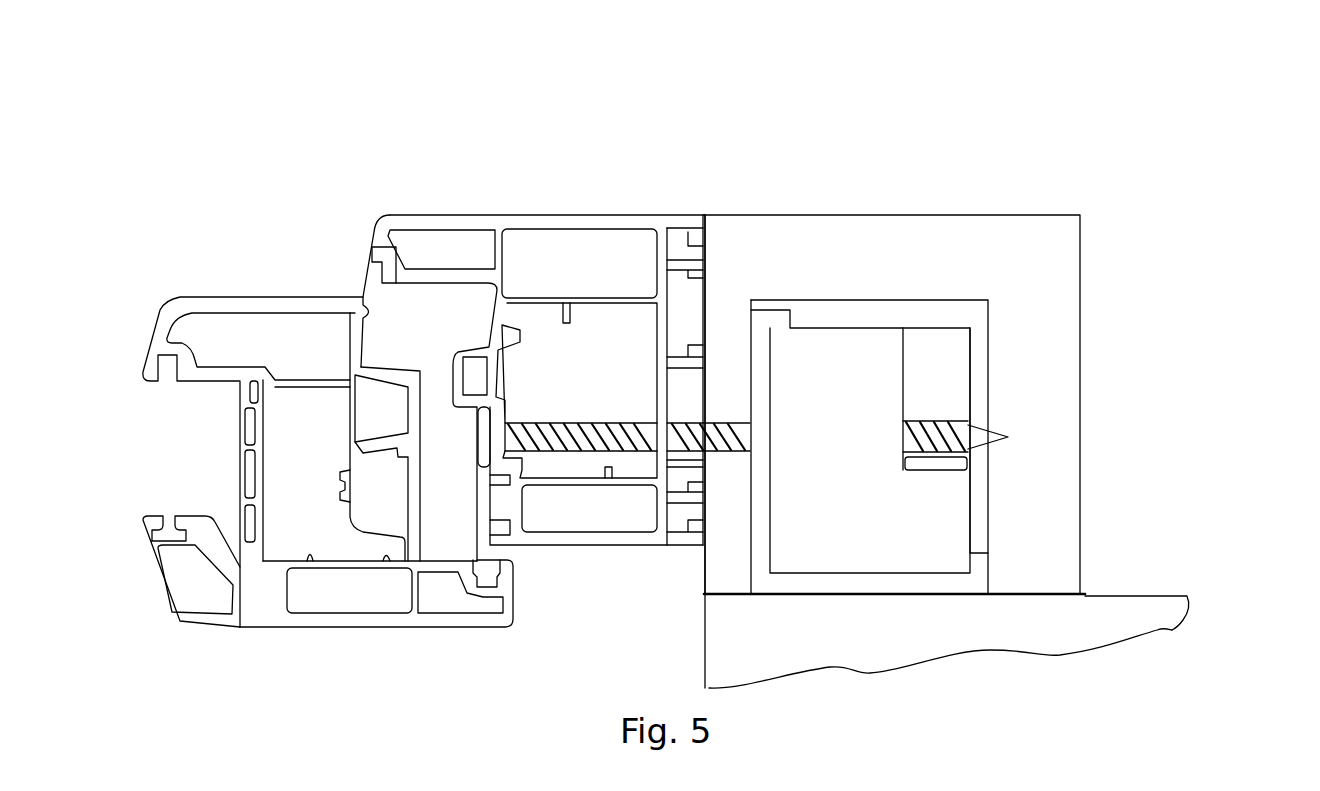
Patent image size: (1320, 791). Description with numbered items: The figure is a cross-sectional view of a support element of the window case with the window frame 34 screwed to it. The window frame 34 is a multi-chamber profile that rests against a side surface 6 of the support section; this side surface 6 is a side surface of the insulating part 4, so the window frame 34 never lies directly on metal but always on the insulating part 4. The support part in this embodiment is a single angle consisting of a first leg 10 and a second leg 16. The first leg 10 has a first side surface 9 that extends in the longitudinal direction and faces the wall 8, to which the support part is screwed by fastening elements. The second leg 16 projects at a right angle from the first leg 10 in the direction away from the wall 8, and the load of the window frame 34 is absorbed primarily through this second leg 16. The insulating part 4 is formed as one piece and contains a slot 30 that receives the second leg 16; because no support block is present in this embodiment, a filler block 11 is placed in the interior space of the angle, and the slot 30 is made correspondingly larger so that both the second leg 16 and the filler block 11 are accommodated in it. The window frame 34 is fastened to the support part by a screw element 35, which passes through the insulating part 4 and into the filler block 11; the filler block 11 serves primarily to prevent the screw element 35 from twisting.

The window frame 34 is at (350, 282).
The second leg 16 is at (755, 362).
The filler block 11 is at (850, 365).
The slot 30 is at (978, 310).
The insulating part 4 is at (1048, 268).
The screw element 35 is at (933, 430).
The side surface 6 is at (702, 575).
The wall 8 is at (900, 638).
The first side surface 9 is at (933, 585).
The first leg 10 is at (917, 595).